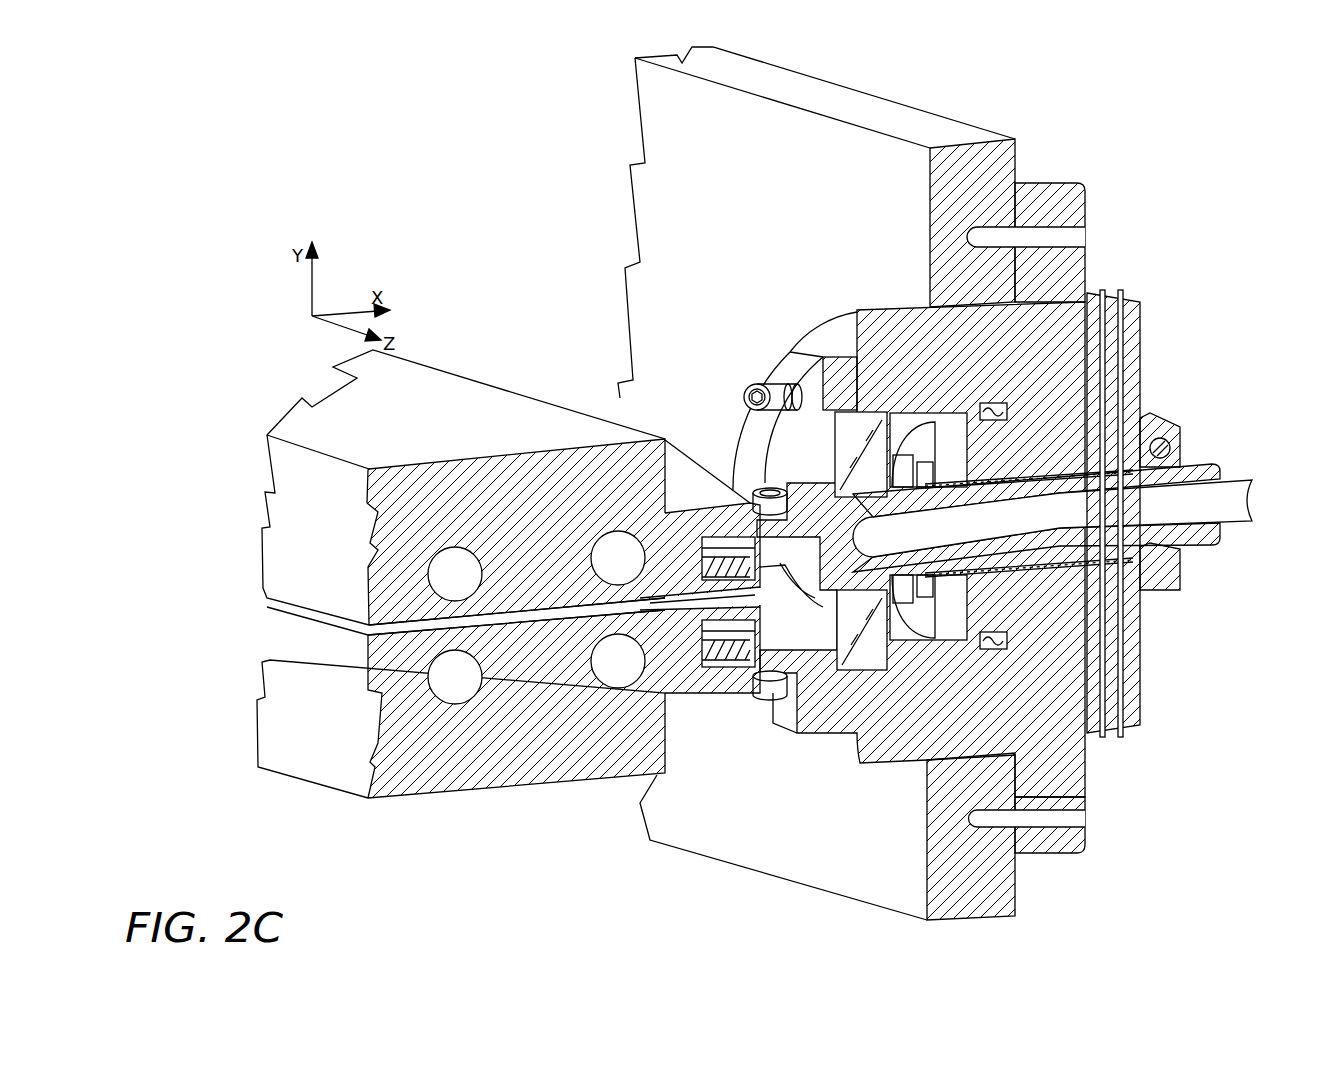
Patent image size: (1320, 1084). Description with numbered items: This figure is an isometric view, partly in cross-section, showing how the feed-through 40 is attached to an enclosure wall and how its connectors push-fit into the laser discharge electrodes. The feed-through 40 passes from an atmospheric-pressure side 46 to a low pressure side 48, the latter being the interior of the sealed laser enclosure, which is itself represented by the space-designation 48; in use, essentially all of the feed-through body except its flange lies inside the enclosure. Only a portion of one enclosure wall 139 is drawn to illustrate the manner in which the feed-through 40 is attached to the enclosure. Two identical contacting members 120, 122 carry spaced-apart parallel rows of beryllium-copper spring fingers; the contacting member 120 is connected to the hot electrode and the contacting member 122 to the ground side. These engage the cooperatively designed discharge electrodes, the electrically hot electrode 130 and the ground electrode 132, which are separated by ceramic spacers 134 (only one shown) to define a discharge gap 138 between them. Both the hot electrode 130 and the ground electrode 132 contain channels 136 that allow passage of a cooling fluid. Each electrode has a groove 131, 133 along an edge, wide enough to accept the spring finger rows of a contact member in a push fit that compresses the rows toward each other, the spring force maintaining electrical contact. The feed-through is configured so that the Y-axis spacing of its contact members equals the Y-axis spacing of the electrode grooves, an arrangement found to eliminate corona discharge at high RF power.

The feed-through 40 is at (1183, 280).
The atmospheric-pressure side 46 is at (1195, 355).
The low pressure side 48 is at (571, 291).
The contacting member 120 is at (713, 514).
The contacting member 122 is at (740, 691).
The discharge-electrode 130 is at (461, 364).
The groove 131 is at (703, 553).
The discharge-electrode 132 is at (510, 800).
The groove 133 is at (726, 665).
The ceramic spacer 134 is at (704, 650).
The channel 136 is at (452, 574).
The discharge gap 138 is at (540, 627).
The wall 139 is at (667, 150).